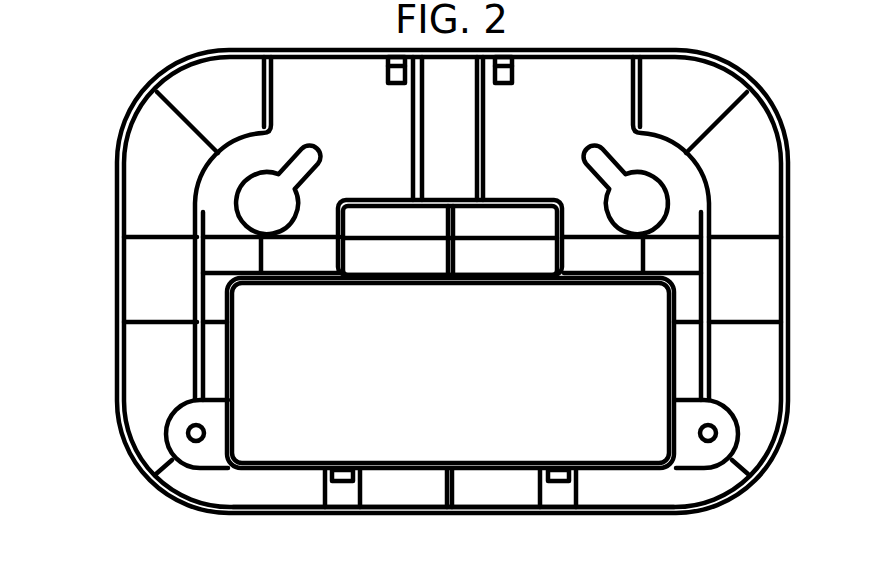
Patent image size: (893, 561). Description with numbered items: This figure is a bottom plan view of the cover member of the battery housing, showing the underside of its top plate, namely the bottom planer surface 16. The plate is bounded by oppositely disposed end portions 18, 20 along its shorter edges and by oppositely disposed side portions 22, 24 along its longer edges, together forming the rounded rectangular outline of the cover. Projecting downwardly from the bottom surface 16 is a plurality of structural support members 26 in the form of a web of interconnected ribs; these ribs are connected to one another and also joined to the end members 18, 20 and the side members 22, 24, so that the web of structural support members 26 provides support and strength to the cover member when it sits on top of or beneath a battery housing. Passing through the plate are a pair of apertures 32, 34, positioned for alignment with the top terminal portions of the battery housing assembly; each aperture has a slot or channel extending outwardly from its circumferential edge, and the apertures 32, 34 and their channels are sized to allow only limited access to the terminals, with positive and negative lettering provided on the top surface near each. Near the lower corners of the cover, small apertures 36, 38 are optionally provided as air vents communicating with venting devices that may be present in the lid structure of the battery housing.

The bottom planer surface 16 is at (166, 208).
The end portion 18 is at (118, 353).
The end portion 20 is at (789, 274).
The side portion 22 is at (377, 513).
The side portion 24 is at (460, 50).
The structural support members 26 is at (246, 153).
The aperture 32 is at (283, 207).
The aperture 34 is at (617, 206).
The small aperture 36 is at (199, 442).
The small aperture 38 is at (709, 442).